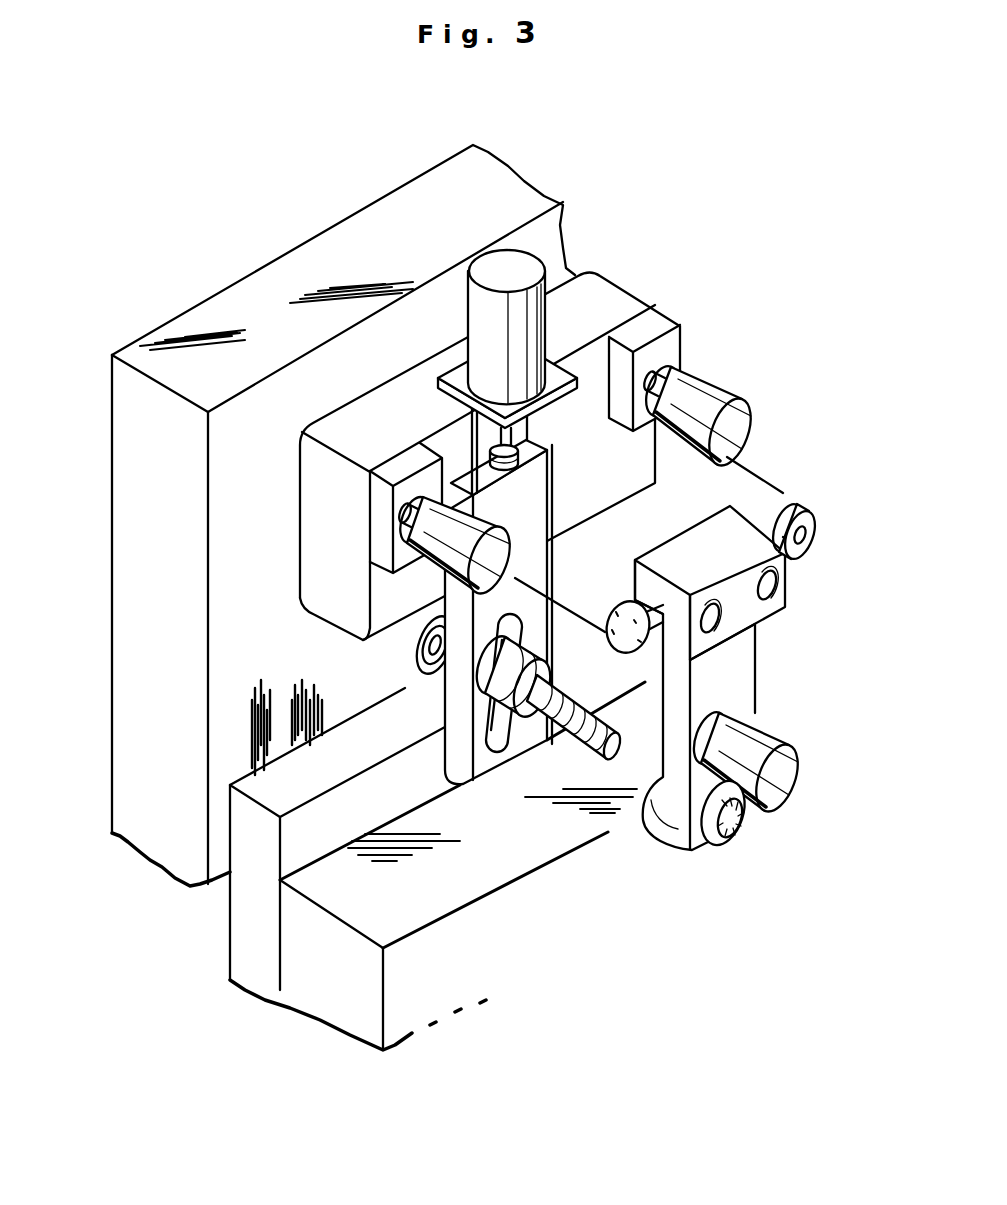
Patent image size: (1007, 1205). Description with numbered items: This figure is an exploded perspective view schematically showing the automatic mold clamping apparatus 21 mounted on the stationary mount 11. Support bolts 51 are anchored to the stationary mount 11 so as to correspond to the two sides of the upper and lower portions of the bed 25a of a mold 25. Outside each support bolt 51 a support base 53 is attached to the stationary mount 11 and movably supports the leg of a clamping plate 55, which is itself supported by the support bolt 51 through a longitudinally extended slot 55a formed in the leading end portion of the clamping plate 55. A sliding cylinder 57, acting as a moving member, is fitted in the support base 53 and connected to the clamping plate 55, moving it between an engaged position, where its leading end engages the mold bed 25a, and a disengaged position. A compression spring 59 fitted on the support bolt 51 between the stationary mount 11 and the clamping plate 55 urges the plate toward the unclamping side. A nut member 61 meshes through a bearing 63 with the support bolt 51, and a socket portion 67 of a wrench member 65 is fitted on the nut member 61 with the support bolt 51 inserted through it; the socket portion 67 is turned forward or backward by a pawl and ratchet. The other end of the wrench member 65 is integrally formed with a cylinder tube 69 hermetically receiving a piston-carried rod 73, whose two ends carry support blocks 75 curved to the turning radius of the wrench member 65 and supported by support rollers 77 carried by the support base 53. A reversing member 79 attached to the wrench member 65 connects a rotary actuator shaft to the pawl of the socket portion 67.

The stationary mount 11 is at (158, 727).
The automatic mold clamping apparatus 21 is at (415, 418).
The mold 25 is at (314, 1020).
The bed of a mold 25a is at (258, 903).
The support bolt 51 is at (618, 768).
The support base 53 is at (348, 412).
The clamping plate 55 is at (509, 675).
The slot 55a is at (505, 752).
The sliding cylinder 57 is at (512, 337).
The compression spring 59 is at (419, 648).
The nut member 61 is at (556, 750).
The bearing 63 is at (490, 700).
The wrench member 65 is at (753, 695).
The socket portion 67 is at (732, 843).
The cylinder tube 69 is at (715, 565).
The rod 73 is at (784, 495).
The support block 75 is at (820, 537).
The support roller 77 is at (443, 538).
The reversing member 79 is at (773, 781).